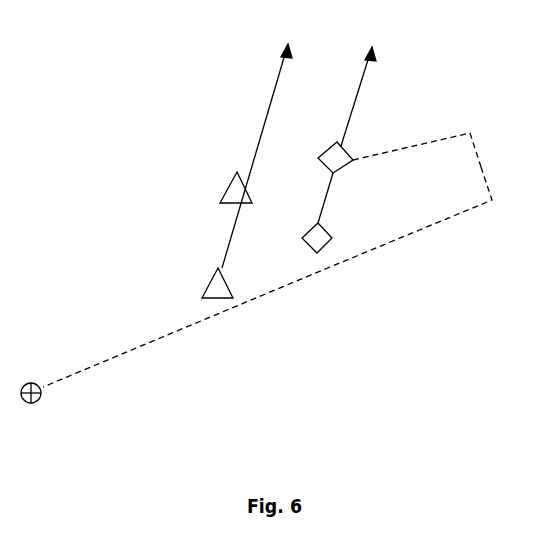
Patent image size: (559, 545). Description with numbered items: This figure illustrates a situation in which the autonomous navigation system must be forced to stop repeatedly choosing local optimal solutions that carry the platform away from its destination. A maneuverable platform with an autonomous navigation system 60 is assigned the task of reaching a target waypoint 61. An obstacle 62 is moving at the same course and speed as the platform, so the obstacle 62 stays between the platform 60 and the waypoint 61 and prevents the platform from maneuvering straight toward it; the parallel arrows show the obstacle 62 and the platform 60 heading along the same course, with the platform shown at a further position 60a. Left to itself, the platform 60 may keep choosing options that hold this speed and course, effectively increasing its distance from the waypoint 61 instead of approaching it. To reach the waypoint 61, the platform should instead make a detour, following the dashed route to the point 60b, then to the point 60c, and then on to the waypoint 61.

The maneuverable platform with autonomous navigation system 60 is at (320, 238).
The platform position 60a is at (356, 167).
The detour waypoint 60b is at (427, 134).
The detour waypoint 60c is at (436, 217).
The waypoint 61 is at (42, 396).
The obstacle 62 is at (217, 283).